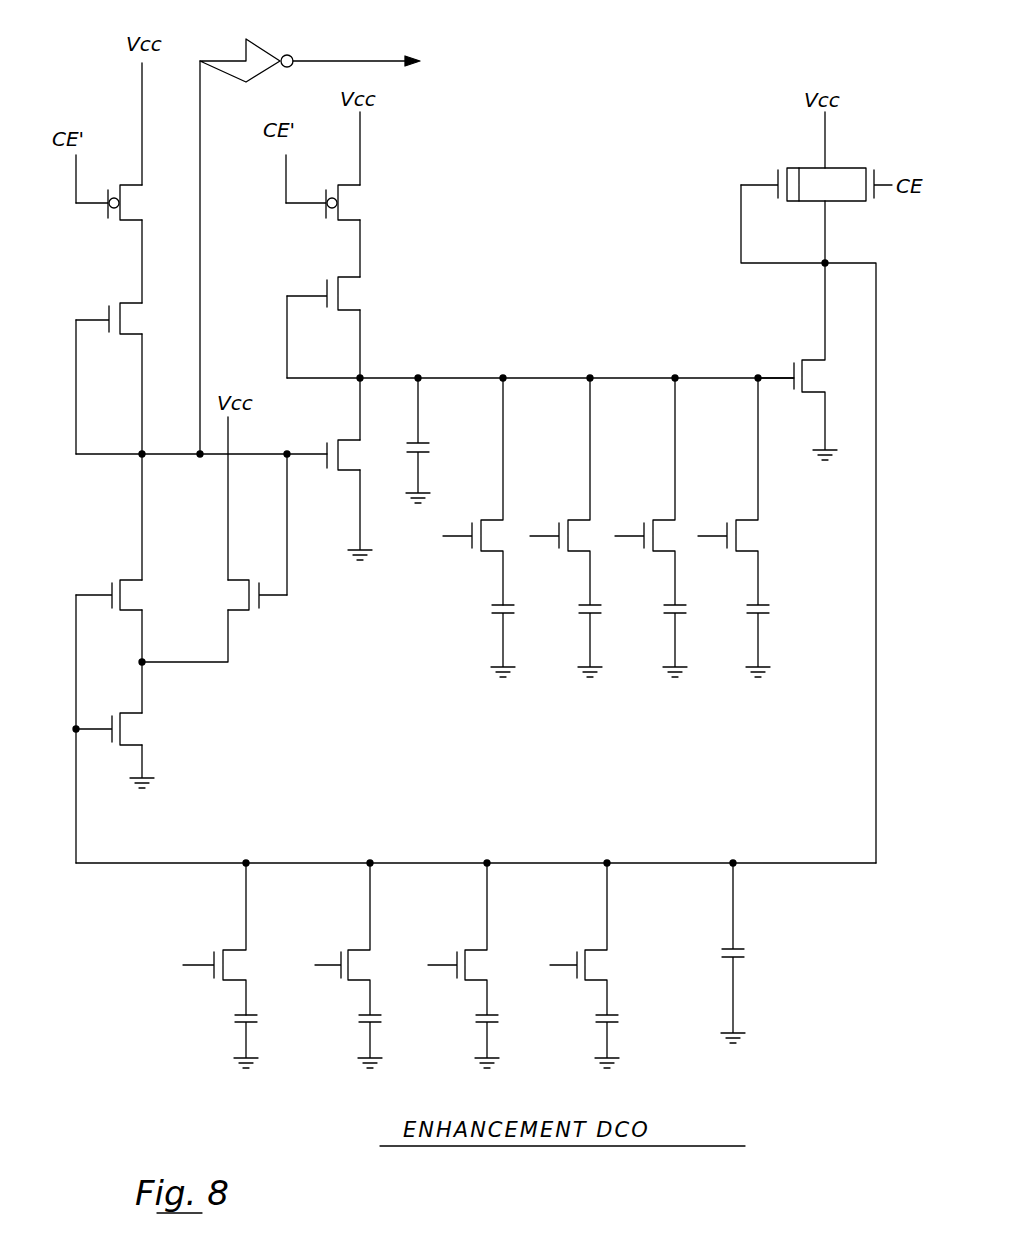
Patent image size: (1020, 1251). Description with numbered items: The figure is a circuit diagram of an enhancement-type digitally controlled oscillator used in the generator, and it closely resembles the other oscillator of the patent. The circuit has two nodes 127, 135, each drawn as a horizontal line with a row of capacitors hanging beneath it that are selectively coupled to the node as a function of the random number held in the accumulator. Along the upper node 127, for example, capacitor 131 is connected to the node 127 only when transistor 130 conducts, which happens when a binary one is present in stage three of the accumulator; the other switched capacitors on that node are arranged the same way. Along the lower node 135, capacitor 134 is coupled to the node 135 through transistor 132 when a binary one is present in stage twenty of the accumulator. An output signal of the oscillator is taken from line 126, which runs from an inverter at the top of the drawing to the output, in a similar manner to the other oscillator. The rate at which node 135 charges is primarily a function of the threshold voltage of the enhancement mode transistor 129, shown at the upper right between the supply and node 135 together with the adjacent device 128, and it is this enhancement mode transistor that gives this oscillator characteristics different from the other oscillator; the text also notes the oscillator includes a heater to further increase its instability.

The line 126 is at (334, 60).
The node 127 is at (557, 376).
The enhancement transistor 128 is at (808, 173).
The enhancement mode transistor 129 is at (845, 172).
The transistor 130 is at (490, 529).
The capacitor 131 is at (497, 615).
The transistor 132 is at (232, 960).
The capacitor 134 is at (240, 1023).
The node 135 is at (334, 862).